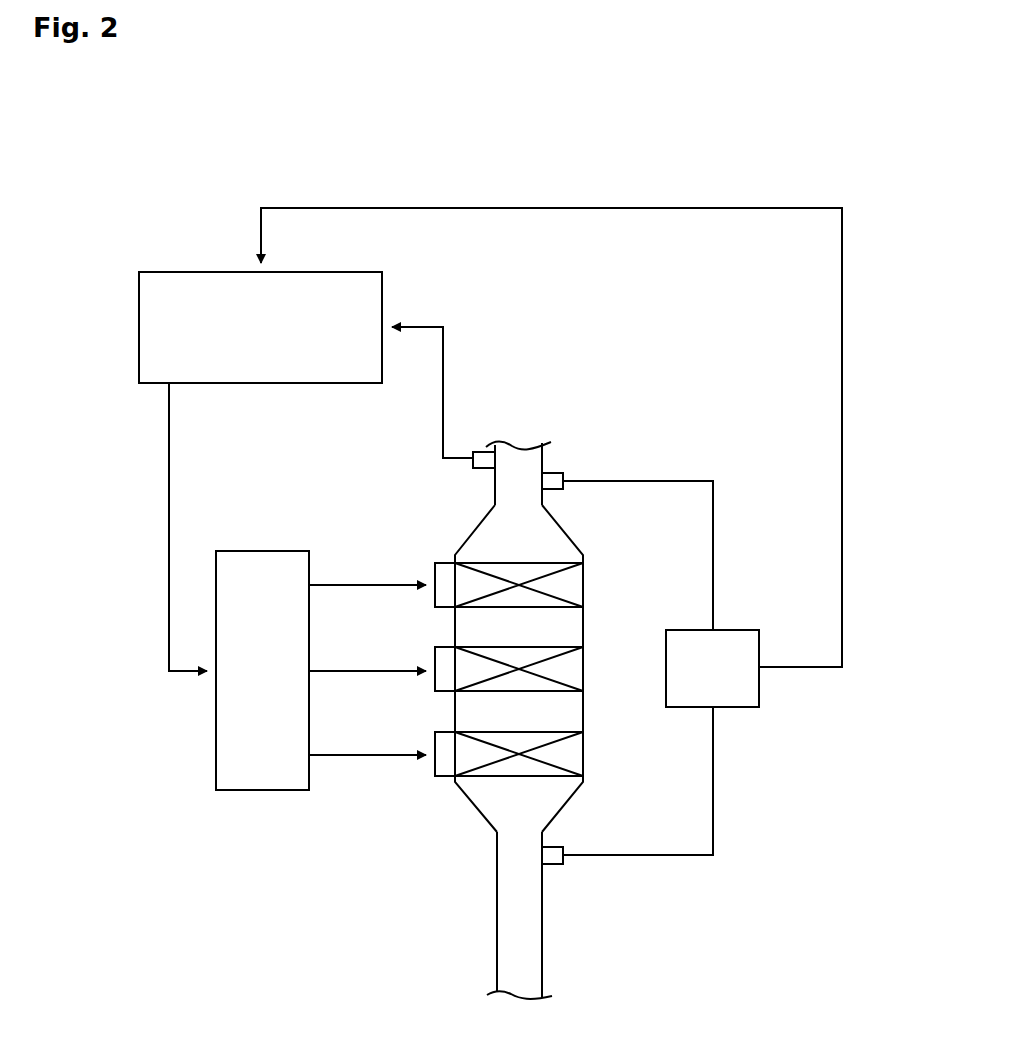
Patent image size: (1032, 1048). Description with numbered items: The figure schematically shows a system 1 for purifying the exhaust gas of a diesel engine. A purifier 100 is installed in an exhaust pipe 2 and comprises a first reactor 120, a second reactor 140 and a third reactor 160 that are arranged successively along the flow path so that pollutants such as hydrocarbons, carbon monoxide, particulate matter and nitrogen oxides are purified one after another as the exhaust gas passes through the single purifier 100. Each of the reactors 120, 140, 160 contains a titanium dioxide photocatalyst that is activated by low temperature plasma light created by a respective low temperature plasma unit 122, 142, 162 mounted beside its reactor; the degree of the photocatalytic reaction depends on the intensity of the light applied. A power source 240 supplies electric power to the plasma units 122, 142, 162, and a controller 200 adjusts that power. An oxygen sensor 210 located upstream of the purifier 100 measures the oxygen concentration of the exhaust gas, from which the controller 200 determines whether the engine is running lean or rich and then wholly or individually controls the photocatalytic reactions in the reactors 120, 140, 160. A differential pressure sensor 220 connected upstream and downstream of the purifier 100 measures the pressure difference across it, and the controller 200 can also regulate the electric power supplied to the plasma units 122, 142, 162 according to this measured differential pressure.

The exhaust gas purification system 1 is at (857, 147).
The exhaust pipe 2 is at (543, 453).
The system for purifying exhaust gas 100 is at (458, 518).
The first reactor 120 is at (575, 583).
The low temperature plasma unit 122 is at (435, 601).
The second reactor 140 is at (575, 667).
The low temperature plasma unit 142 is at (435, 685).
The third reactor 160 is at (575, 751).
The low temperature plasma unit 162 is at (435, 770).
The controller 200 is at (139, 326).
The oxygen sensor 210 is at (488, 448).
The differential pressure sensor 220 is at (760, 645).
The power source 240 is at (216, 742).